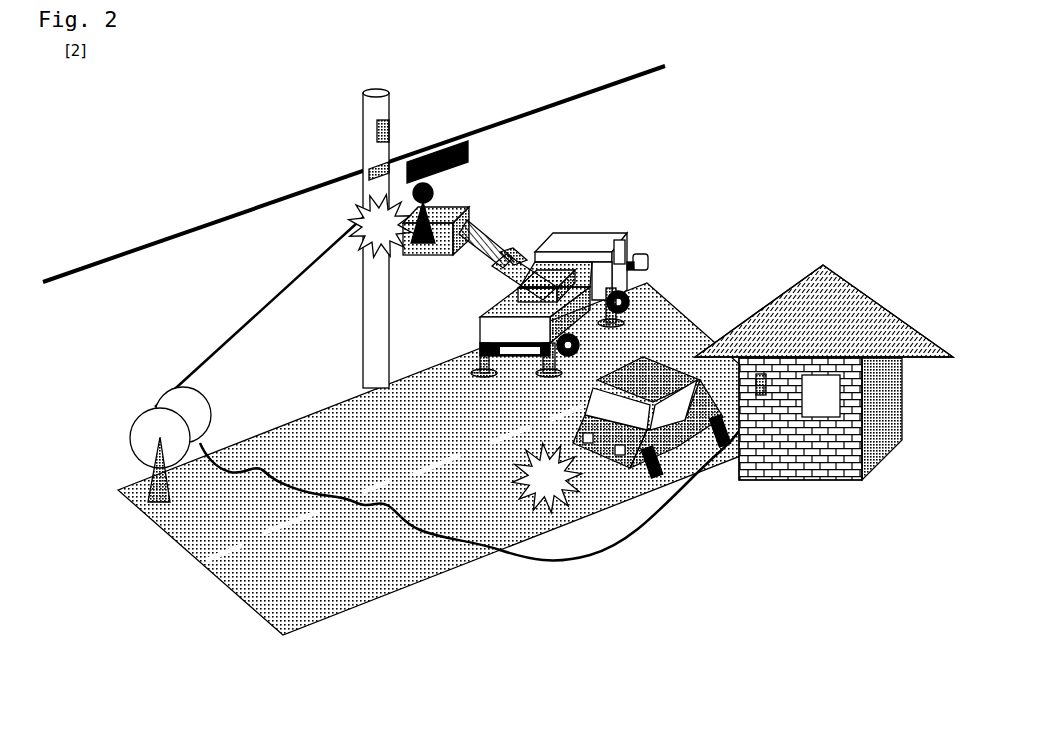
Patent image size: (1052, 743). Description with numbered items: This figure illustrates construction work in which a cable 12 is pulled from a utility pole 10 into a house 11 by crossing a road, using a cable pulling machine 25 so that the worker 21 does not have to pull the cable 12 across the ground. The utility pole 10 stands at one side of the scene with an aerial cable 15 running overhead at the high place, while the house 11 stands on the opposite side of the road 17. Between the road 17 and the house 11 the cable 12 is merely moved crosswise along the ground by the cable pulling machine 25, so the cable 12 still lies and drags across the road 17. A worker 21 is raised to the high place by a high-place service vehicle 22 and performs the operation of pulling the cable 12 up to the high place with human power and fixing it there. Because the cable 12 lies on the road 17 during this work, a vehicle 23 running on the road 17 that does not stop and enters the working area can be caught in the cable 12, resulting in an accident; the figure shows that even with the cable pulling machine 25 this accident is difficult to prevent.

The utility pole 10 is at (376, 93).
The house 11 is at (848, 276).
The cable 12 is at (206, 356).
The aerial cable 15 is at (160, 238).
The road 17 is at (303, 415).
The worker 21 is at (448, 194).
The high-place service vehicle 22 is at (576, 233).
The vehicle 23 is at (651, 360).
The cable pulling machine 25 is at (136, 414).